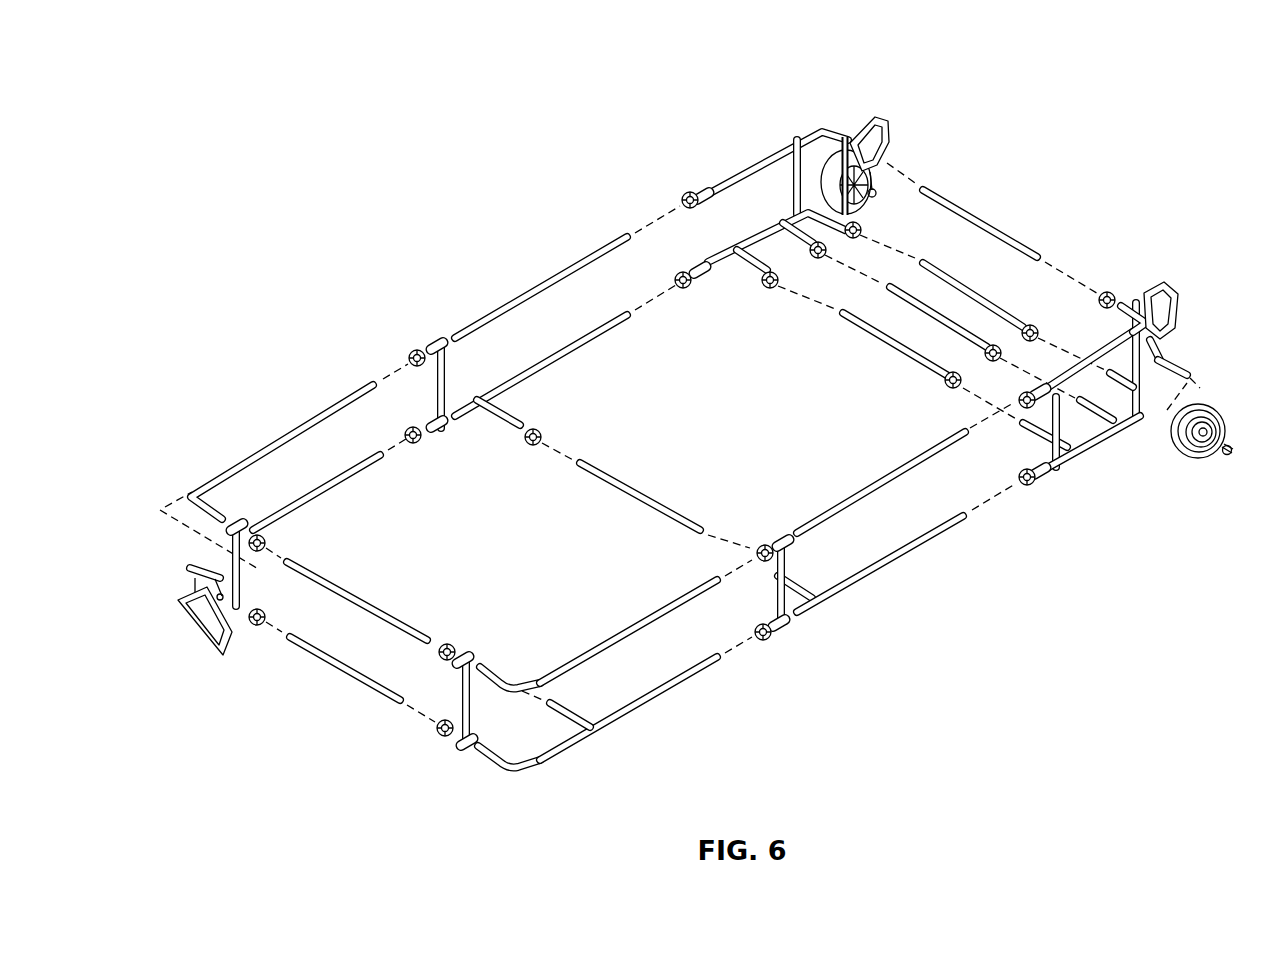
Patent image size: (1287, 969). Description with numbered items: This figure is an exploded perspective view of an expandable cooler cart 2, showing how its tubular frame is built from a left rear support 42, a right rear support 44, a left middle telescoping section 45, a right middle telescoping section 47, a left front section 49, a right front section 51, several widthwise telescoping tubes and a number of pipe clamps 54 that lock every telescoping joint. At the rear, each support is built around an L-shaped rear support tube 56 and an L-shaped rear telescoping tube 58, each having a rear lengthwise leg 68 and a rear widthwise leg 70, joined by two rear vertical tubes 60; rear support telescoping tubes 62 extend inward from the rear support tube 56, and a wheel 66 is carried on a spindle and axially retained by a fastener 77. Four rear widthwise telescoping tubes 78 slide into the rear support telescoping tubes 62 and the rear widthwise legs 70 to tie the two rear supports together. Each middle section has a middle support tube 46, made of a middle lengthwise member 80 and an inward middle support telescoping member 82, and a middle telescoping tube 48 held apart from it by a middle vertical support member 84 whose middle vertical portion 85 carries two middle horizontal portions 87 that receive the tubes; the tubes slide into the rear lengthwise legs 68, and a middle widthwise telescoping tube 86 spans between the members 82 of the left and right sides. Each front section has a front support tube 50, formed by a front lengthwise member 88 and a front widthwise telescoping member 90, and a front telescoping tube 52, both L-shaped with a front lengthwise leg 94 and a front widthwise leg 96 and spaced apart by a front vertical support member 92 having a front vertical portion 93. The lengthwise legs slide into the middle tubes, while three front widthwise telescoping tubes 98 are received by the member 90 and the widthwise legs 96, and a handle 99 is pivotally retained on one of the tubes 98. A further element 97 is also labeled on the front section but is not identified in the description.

The expandable cooler cart 2 is at (698, 435).
The left rear support 42 is at (1102, 369).
The right rear support 44 is at (845, 118).
The left middle telescoping section 45 is at (840, 566).
The middle support tube 46 is at (570, 350).
The right middle telescoping section 47 is at (576, 460).
The middle telescoping tube 48 is at (560, 267).
The left front section 49 is at (456, 671).
The front support tube 50 is at (337, 490).
The right front section 51 is at (280, 416).
The front telescoping tube 52 is at (340, 397).
The pipe clamp 54 is at (1110, 293).
The rear support tube 56 is at (1133, 433).
The rear telescoping tube 58 is at (1100, 347).
The rear vertical tube 60 is at (1037, 425).
The rear support telescoping tube 62 is at (1093, 413).
The wheel 66 is at (1193, 407).
The rear lengthwise leg 68 is at (1066, 383).
The rear widthwise leg 70 is at (1128, 297).
The fastener 77 is at (1228, 453).
The rear widthwise telescoping tube 78 is at (972, 208).
The middle lengthwise member 80 is at (910, 557).
The middle support telescoping member 82 is at (452, 372).
The middle vertical support member 84 is at (790, 633).
The middle vertical portion 85 is at (773, 590).
The middle widthwise telescoping tube 86 is at (620, 492).
The middle horizontal portion 87 is at (782, 537).
The front lengthwise member 88 is at (623, 720).
The front widthwise telescoping member 90 is at (570, 707).
The front vertical support member 92 is at (470, 713).
The front vertical portion 93 is at (457, 697).
The front lengthwise leg 94 is at (593, 643).
The front widthwise leg 96 is at (500, 678).
The connector hub 97 is at (460, 655).
The front widthwise telescoping tube 98 is at (397, 607).
The handle 99 is at (208, 648).